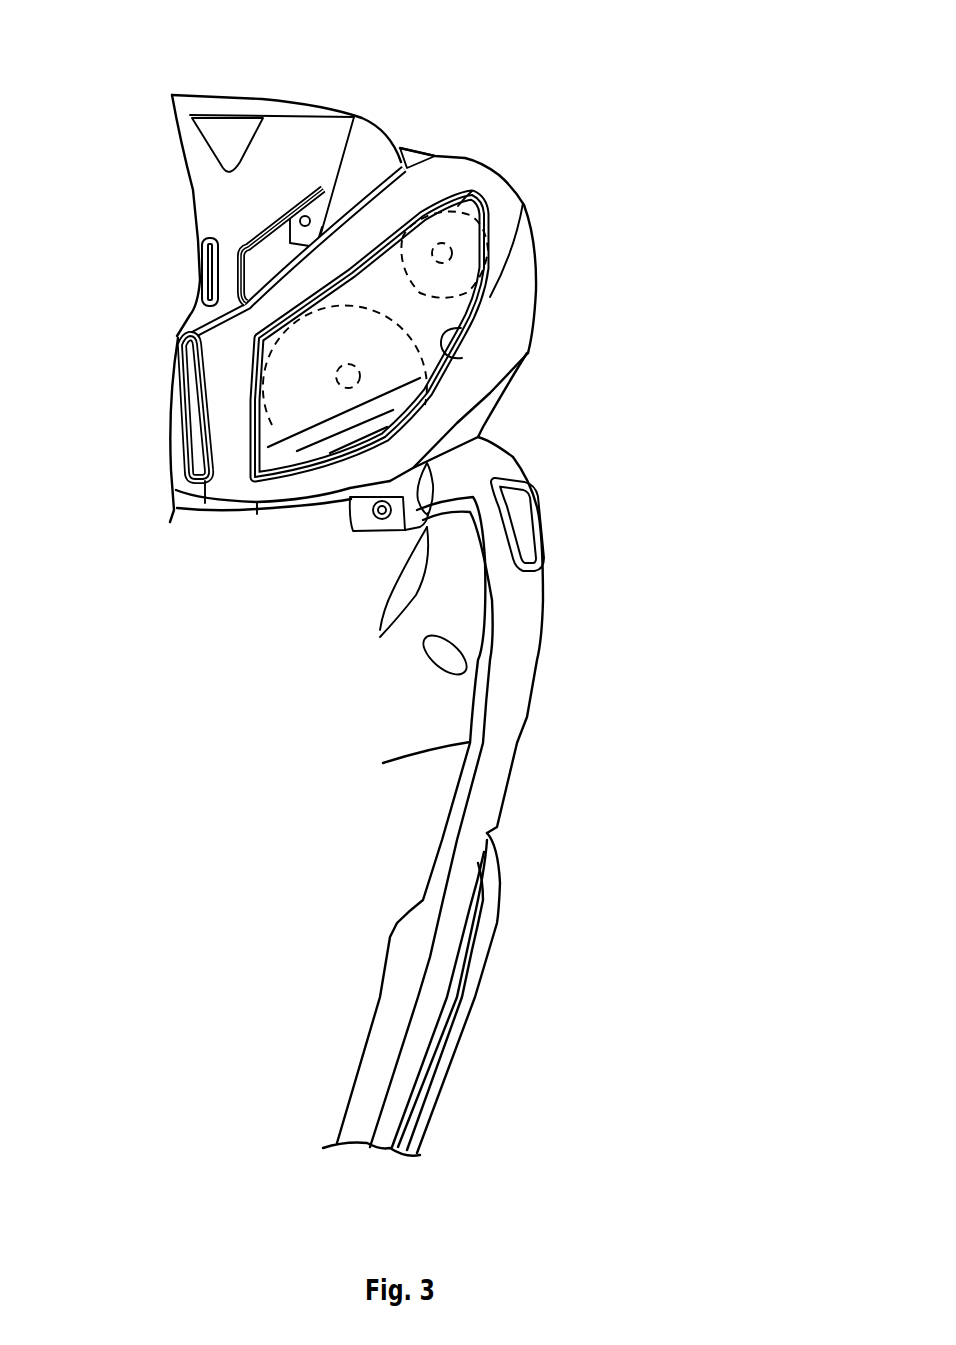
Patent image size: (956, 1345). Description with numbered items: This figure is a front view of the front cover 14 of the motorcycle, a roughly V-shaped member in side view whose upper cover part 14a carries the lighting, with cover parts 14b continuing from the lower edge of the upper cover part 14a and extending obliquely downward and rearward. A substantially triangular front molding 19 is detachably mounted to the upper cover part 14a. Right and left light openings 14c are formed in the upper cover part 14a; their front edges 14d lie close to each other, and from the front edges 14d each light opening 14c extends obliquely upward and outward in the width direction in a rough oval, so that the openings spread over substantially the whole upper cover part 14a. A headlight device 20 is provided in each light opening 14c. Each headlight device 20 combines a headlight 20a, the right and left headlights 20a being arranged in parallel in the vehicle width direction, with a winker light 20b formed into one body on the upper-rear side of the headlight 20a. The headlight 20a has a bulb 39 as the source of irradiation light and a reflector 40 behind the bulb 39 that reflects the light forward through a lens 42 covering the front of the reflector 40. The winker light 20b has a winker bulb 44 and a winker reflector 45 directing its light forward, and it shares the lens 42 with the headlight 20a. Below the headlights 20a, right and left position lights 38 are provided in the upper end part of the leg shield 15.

The front cover 14 is at (548, 301).
The upper cover part 14a is at (228, 487).
The cover parts 14b is at (521, 333).
The light openings 14c is at (174, 452).
The front edges 14d is at (200, 510).
The leg shield 15 is at (550, 636).
The front molding 19 is at (340, 105).
The headlight device 20 is at (491, 203).
The headlights 20a is at (360, 288).
The winker lights 20b is at (457, 190).
The position lights 38 is at (534, 537).
The bulbs 39 is at (333, 377).
The reflectors 40 is at (280, 418).
The lens 42 is at (392, 407).
The winker bulbs 44 is at (500, 233).
The winker reflectors 45 is at (503, 268).